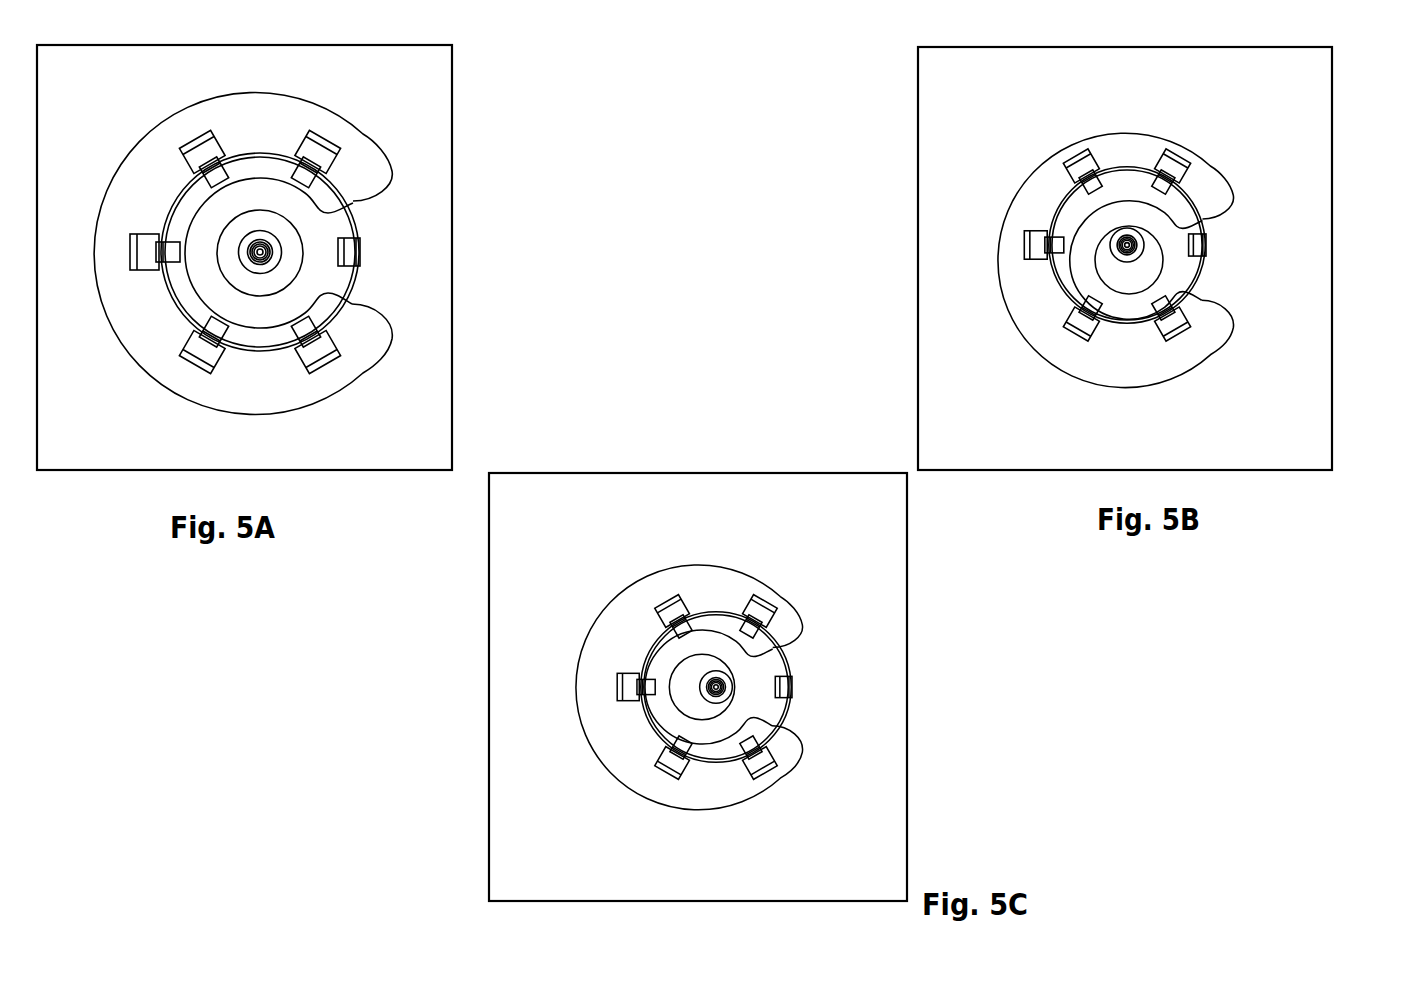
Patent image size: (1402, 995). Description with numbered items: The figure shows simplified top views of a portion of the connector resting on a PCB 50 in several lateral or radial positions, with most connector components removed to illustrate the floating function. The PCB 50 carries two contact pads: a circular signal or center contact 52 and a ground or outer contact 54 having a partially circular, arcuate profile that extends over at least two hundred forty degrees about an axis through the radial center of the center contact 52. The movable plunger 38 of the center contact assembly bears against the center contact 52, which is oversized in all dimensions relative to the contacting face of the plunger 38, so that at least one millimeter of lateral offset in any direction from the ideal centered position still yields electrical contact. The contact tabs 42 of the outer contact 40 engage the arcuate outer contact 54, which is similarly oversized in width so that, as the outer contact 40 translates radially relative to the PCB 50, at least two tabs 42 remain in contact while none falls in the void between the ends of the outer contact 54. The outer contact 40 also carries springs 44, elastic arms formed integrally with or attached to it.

In FIG. 5A, the plunger 38 is at (247, 252).
In FIG. 5B, the plunger 38 is at (1127, 245).
In FIG. 5C, the plunger 38 is at (717, 687).
In FIG. 5A, the outer contact 40 is at (357, 218).
In FIG. 5B, the outer contact 40 is at (1207, 225).
In FIG. 5C, the outer contact 40 is at (787, 660).
In FIG. 5A, the contact tabs 42 is at (200, 152).
In FIG. 5A, the springs 44 is at (323, 133).
In FIG. 5A, the PCB 50 is at (407, 85).
In FIG. 5B, the PCB 50 is at (1305, 80).
In FIG. 5C, the PCB 50 is at (828, 495).
In FIG. 5A, the center contact 52 is at (290, 257).
In FIG. 5B, the center contact 52 is at (1143, 275).
In FIG. 5C, the center contact 52 is at (707, 707).
In FIG. 5A, the outer contact 54 is at (253, 115).
In FIG. 5B, the outer contact 54 is at (1131, 148).
In FIG. 5C, the outer contact 54 is at (680, 582).